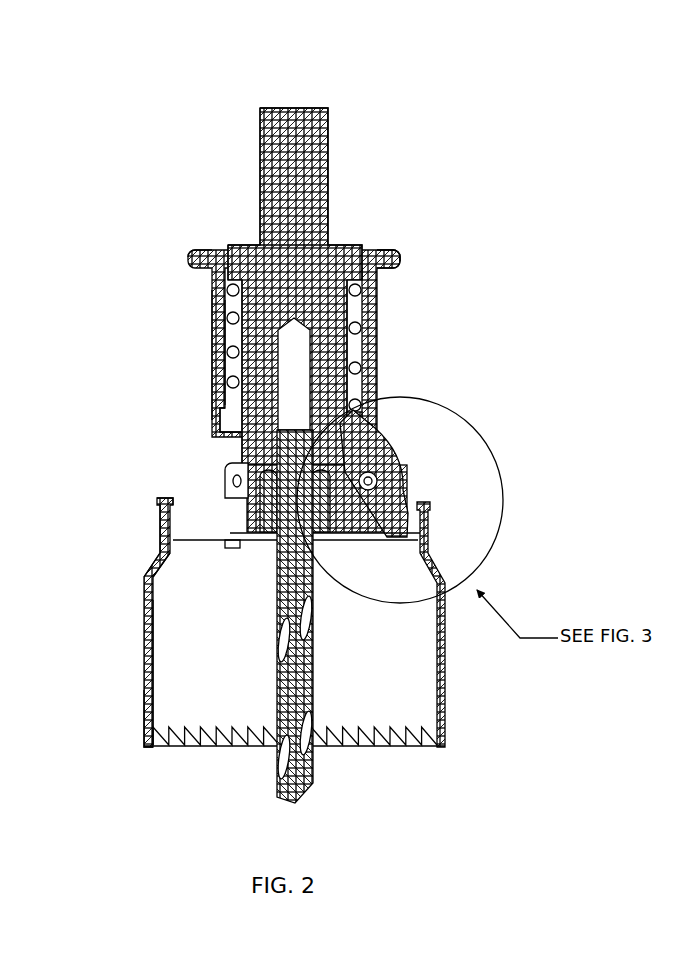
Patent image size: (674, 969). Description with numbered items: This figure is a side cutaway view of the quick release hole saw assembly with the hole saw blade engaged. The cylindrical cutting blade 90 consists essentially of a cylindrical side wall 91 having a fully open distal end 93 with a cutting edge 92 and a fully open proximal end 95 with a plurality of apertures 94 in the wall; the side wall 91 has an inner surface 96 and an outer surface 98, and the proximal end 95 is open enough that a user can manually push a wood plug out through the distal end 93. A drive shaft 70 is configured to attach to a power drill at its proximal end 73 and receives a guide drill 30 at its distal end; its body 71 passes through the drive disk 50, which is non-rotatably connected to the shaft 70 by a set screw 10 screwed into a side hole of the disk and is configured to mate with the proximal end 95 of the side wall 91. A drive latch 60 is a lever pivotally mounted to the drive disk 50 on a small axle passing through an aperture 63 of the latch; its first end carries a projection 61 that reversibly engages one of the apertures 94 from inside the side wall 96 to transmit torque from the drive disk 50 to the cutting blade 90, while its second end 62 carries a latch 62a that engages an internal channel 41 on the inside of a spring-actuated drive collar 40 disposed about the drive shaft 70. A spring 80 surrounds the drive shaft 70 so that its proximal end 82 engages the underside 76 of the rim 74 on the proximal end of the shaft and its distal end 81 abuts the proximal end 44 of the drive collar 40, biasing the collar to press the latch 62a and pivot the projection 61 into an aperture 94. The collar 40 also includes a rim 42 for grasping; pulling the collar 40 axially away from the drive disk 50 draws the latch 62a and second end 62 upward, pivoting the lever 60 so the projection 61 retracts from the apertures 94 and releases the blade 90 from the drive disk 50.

The set screw 10 is at (410, 488).
The guide drill 30 is at (300, 800).
The spring-actuated drive collar 40 is at (380, 343).
The internal channel 41 is at (235, 425).
The rim 42 is at (393, 277).
The proximal end of drive collar 44 is at (386, 255).
The drive disk 50 is at (387, 563).
The drive latch 60 is at (450, 473).
The projection 61 is at (412, 528).
The second end of drive latch 62 is at (348, 416).
The latch 62a is at (364, 432).
The aperture of drive latch 63 is at (358, 455).
The drive shaft 70 is at (292, 104).
The shaft body 71 is at (330, 308).
The proximal end of drive shaft 73 is at (320, 130).
The rim 74 is at (226, 250).
The underside of rim 76 is at (212, 270).
The spring 80 is at (218, 330).
The distal end of spring 81 is at (236, 378).
The proximal end of spring 82 is at (229, 296).
The cylindrical cutting blade 90 is at (254, 666).
The cylindrical side wall 91 is at (148, 632).
The cutting edge 92 is at (193, 752).
The distal end 93 is at (242, 760).
The apertures 94 is at (430, 540).
The proximal end 95 is at (168, 560).
The inner surface 96 is at (158, 600).
The outer surface 98 is at (143, 712).